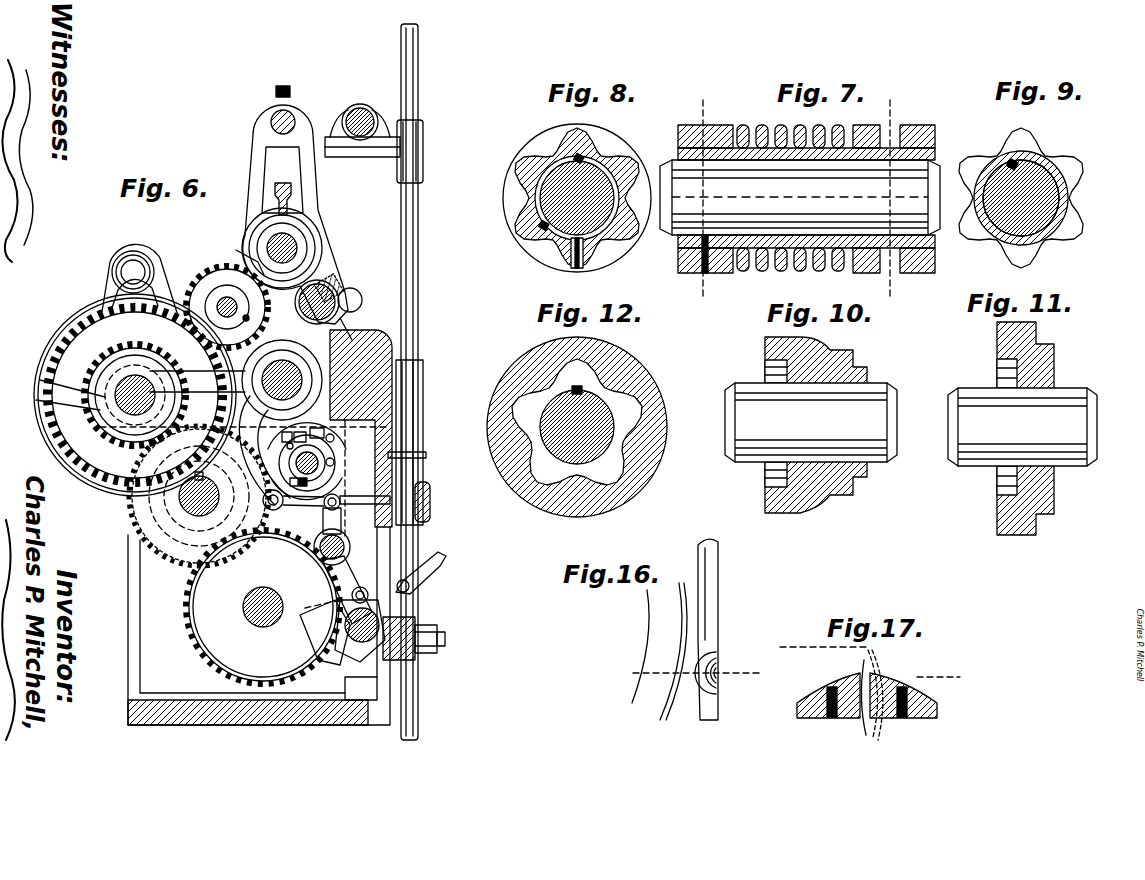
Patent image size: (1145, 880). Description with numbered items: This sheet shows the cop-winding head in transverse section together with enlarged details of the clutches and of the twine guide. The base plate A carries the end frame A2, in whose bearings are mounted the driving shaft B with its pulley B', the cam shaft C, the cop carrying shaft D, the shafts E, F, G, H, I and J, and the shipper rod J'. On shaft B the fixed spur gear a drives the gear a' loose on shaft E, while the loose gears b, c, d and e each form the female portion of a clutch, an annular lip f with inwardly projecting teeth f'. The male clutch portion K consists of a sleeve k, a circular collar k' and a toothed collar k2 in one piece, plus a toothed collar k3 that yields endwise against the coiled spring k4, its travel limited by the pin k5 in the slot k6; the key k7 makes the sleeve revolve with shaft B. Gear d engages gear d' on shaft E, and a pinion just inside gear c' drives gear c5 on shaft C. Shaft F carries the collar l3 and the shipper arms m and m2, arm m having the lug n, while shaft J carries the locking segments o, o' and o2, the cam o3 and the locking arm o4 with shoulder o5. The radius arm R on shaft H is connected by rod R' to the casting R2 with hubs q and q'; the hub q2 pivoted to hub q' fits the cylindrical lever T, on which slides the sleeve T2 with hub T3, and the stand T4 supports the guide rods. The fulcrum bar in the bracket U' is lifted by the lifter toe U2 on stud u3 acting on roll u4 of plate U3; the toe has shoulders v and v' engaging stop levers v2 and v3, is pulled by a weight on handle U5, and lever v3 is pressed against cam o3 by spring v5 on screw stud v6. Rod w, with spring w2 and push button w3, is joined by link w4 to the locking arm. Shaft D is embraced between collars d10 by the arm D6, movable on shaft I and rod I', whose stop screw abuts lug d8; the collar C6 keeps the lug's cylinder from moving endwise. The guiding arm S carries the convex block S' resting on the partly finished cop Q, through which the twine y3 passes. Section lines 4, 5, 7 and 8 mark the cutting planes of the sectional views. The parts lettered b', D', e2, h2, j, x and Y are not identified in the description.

In FIG. 6, the base plate A is at (128, 712).
In FIG. 6, the end frame A2 is at (318, 198).
In FIG. 6, the driving shaft B is at (55, 409).
In FIG. 8, the driving shaft B is at (591, 215).
In FIG. 7, the driving shaft B is at (800, 197).
In FIG. 9, the driving shaft B is at (1022, 212).
In FIG. 12, the driving shaft B is at (570, 425).
In FIG. 10, the driving shaft B is at (811, 422).
In FIG. 11, the driving shaft B is at (1022, 427).
In FIG. 6, the pulley B' is at (135, 394).
In FIG. 6, the spur gear wheel a is at (135, 382).
In FIG. 6, the spur gear wheel a' is at (111, 527).
In FIG. 6, the spur gear wheel b is at (130, 395).
In FIG. 6, the stud b' is at (249, 309).
In FIG. 6, the cam shaft C is at (264, 587).
In FIG. 6, the collar C6 is at (356, 316).
In FIG. 10, the spur gear wheel c is at (816, 418).
In FIG. 6, the gear c' is at (129, 477).
In FIG. 6, the gear wheel c5 is at (211, 612).
In FIG. 6, the cop carrying shaft D is at (297, 248).
In FIG. 6, the hub D' is at (309, 302).
In FIG. 6, the arm D6 is at (300, 226).
In FIG. 6, the spur gear wheel d is at (56, 386).
In FIG. 6, the gear d' is at (333, 266).
In FIG. 6, the lug d8 is at (340, 278).
In FIG. 6, the collars d10 is at (330, 238).
In FIG. 6, the shaft E is at (198, 518).
In FIG. 6, the spur gear wheel e is at (118, 393).
In FIG. 6, the stud e2 is at (360, 298).
In FIG. 6, the shaft F is at (283, 342).
In FIG. 12, the annular lip f is at (579, 427).
In FIG. 10, the annular lip f is at (755, 335).
In FIG. 11, the annular lip f is at (1011, 428).
In FIG. 12, the teeth f' is at (574, 436).
In FIG. 10, the teeth f' is at (765, 426).
In FIG. 11, the teeth f' is at (992, 429).
In FIG. 6, the shaft G is at (222, 305).
In FIG. 6, the shaft H is at (270, 120).
In FIG. 6, the gear h2 is at (85, 278).
In FIG. 6, the shaft I is at (328, 288).
In FIG. 6, the rod I' is at (283, 184).
In FIG. 6, the shaft J is at (307, 461).
In FIG. 6, the shipper rod J' is at (140, 280).
In FIG. 6, the link j is at (240, 262).
In FIG. 8, the male clutch portion K is at (577, 198).
In FIG. 7, the male clutch portion K is at (806, 176).
In FIG. 9, the male clutch portion K is at (1026, 198).
In FIG. 8, the sleeve k is at (551, 198).
In FIG. 7, the sleeve k is at (805, 271).
In FIG. 8, the circular collar k' is at (602, 118).
In FIG. 7, the circular collar k' is at (866, 185).
In FIG. 7, the toothed collar k2 is at (917, 186).
In FIG. 9, the toothed collar k2 is at (1075, 172).
In FIG. 8, the toothed collar k3 is at (516, 174).
In FIG. 7, the toothed collar k3 is at (705, 128).
In FIG. 7, the coiled spring k4 is at (778, 126).
In FIG. 8, the pin k5 is at (579, 270).
In FIG. 7, the pin k5 is at (705, 273).
In FIG. 7, the slot k6 is at (742, 250).
In FIG. 8, the key k7 is at (586, 158).
In FIG. 7, the key k7 is at (935, 158).
In FIG. 6, the collar l3 is at (301, 334).
In FIG. 6, the shipper arm m is at (280, 435).
In FIG. 6, the shipper arm m2 is at (197, 382).
In FIG. 6, the lug n is at (300, 431).
In FIG. 6, the locking segment o is at (326, 469).
In FIG. 6, the locking segment o' is at (317, 427).
In FIG. 6, the locking segment o2 is at (334, 444).
In FIG. 6, the cam o3 is at (292, 449).
In FIG. 6, the locking arm o4 is at (288, 479).
In FIG. 6, the shoulder o5 is at (292, 494).
In FIG. 16, the cop Q is at (659, 651).
In FIG. 17, the cop Q is at (870, 682).
In FIG. 6, the cylindrical hub q is at (360, 111).
In FIG. 6, the cylindrical hub q' is at (374, 168).
In FIG. 6, the sleeve-like hub q2 is at (424, 152).
In FIG. 6, the radius arm R is at (356, 133).
In FIG. 6, the rod R' is at (343, 96).
In FIG. 6, the casting R2 is at (382, 122).
In FIG. 16, the twine guiding and delivering arm S is at (702, 630).
In FIG. 17, the twine guiding and delivering arm S is at (853, 698).
In FIG. 16, the block S' is at (718, 663).
In FIG. 17, the block S' is at (828, 681).
In FIG. 6, the cylindrical lever T is at (420, 232).
In FIG. 6, the sleeve T2 is at (420, 442).
In FIG. 6, the hub T3 is at (410, 440).
In FIG. 6, the stand T4 is at (361, 688).
In FIG. 6, the bracket U' is at (431, 398).
In FIG. 6, the lifter toe U2 is at (296, 633).
In FIG. 6, the plate U3 is at (347, 536).
In FIG. 6, the handle U5 is at (440, 565).
In FIG. 6, the stud u3 is at (415, 660).
In FIG. 6, the roll u4 is at (362, 581).
In FIG. 6, the shoulder v is at (342, 631).
In FIG. 6, the shoulder v' is at (352, 479).
In FIG. 6, the stop lever v2 is at (318, 600).
In FIG. 6, the stop lever v3 is at (322, 585).
In FIG. 6, the coiled spring v5 is at (314, 547).
In FIG. 6, the screw stud v6 is at (415, 451).
In FIG. 6, the rod w is at (365, 512).
In FIG. 6, the spring w2 is at (424, 522).
In FIG. 6, the push button w3 is at (433, 502).
In FIG. 6, the link w4 is at (301, 503).
In FIG. 6, the arm x is at (318, 648).
In FIG. 6, the lever Y is at (264, 450).
In FIG. 17, the twine y3 is at (890, 732).
In FIG. 7, the section line 4 is at (702, 207).
In FIG. 7, the section line 5 is at (890, 199).
In FIG. 6, the section line 7 is at (467, 430).
In FIG. 16, the section line 8 is at (690, 675).